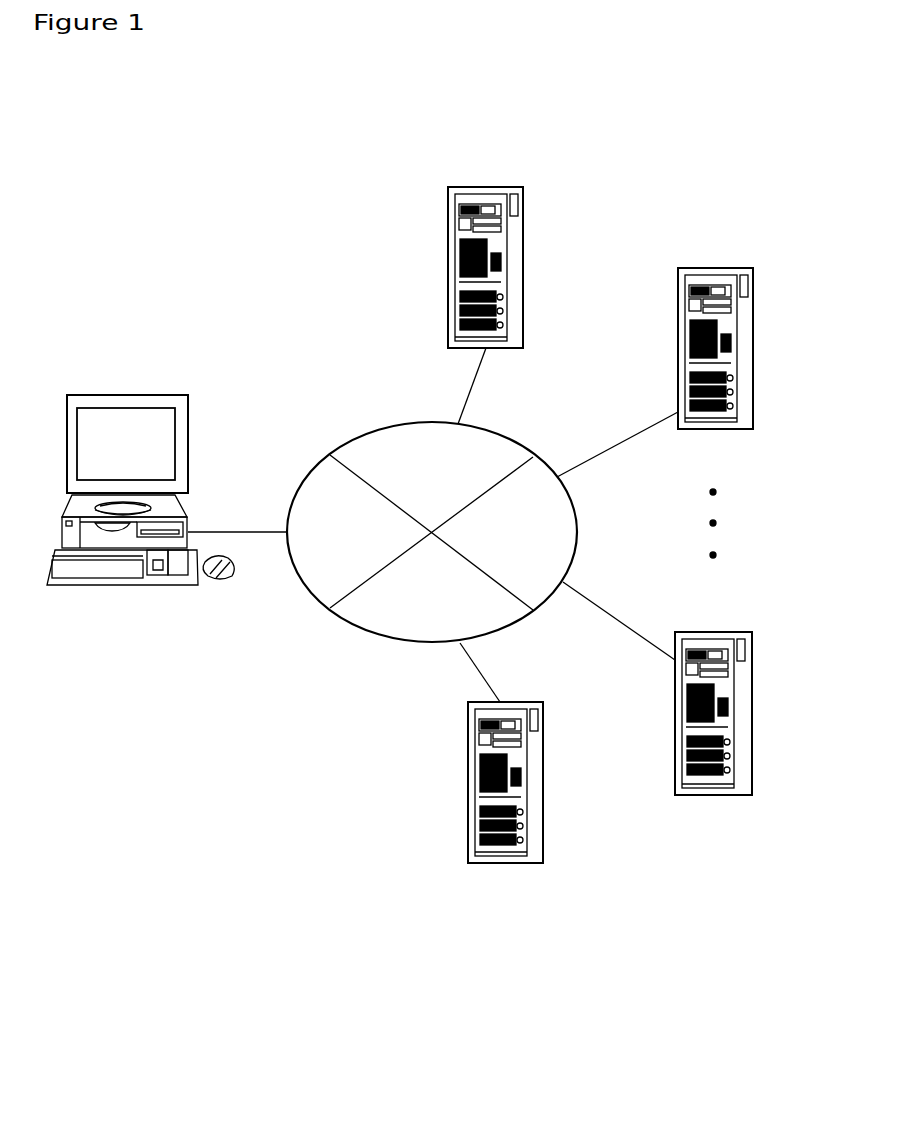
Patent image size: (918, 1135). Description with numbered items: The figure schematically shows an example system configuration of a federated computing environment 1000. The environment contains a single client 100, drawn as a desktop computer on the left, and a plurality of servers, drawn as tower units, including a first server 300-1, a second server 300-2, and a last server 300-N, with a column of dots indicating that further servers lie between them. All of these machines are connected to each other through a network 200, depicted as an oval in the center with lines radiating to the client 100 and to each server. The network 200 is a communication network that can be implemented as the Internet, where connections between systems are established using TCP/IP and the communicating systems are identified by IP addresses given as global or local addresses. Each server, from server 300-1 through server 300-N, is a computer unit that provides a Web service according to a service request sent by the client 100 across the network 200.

The client 100 is at (123, 395).
The network 200 is at (345, 618).
The server 300-1 is at (447, 262).
The server 300-2 is at (724, 268).
The server 300-N is at (466, 800).
The federated computing environment 1000 is at (598, 972).